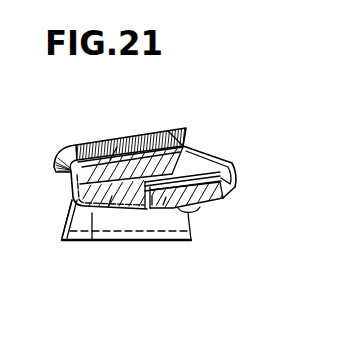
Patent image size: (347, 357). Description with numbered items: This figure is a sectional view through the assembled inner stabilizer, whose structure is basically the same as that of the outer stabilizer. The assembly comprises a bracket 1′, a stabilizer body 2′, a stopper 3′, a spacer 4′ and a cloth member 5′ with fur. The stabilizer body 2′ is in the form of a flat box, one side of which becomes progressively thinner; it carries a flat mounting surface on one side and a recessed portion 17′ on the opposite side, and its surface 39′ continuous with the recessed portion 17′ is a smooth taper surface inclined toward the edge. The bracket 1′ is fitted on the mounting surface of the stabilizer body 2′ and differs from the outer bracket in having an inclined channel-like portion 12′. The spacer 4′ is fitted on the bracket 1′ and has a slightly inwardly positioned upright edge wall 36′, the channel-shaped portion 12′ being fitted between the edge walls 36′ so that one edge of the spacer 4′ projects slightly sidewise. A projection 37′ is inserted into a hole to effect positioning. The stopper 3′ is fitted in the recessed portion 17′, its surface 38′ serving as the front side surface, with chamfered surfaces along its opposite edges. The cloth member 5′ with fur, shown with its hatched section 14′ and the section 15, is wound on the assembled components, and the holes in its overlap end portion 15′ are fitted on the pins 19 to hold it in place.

The bracket 1′ is at (72, 240).
The stabilizer body 2′ is at (71, 200).
The stopper 3′ is at (210, 196).
The spacer 4′ is at (68, 173).
The cloth member with fur 5′ is at (169, 131).
The inclined channel-like portion 12′ is at (108, 207).
The cover band 14′ is at (121, 163).
The channel 15 is at (233, 163).
The overlap end portion 15′ is at (163, 205).
The recessed portion 17′ is at (152, 205).
The pins 19 is at (200, 208).
The upright edge wall 36′ is at (195, 157).
The projection 37′ is at (117, 147).
The surface 38′ is at (200, 206).
The taper surface 39′ is at (92, 213).